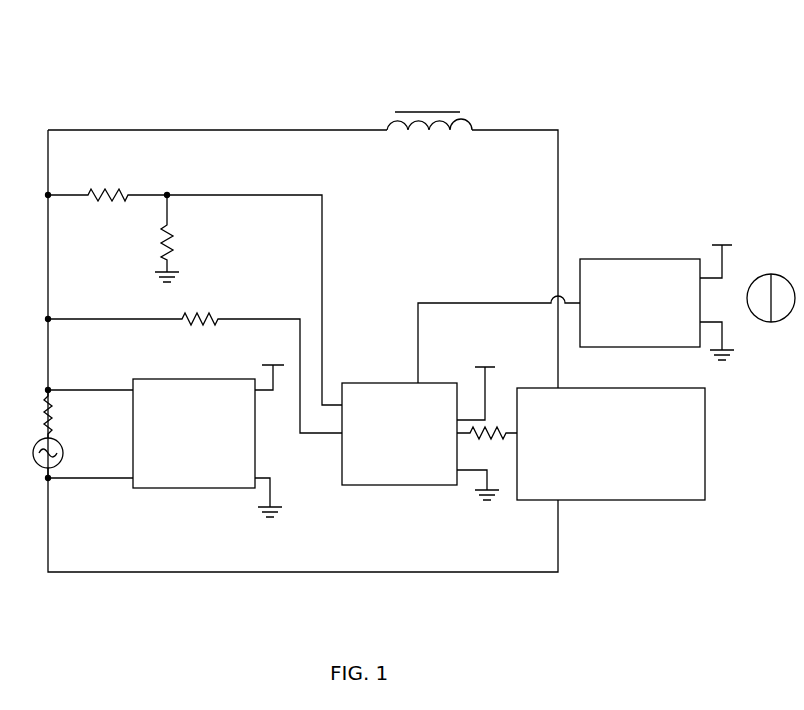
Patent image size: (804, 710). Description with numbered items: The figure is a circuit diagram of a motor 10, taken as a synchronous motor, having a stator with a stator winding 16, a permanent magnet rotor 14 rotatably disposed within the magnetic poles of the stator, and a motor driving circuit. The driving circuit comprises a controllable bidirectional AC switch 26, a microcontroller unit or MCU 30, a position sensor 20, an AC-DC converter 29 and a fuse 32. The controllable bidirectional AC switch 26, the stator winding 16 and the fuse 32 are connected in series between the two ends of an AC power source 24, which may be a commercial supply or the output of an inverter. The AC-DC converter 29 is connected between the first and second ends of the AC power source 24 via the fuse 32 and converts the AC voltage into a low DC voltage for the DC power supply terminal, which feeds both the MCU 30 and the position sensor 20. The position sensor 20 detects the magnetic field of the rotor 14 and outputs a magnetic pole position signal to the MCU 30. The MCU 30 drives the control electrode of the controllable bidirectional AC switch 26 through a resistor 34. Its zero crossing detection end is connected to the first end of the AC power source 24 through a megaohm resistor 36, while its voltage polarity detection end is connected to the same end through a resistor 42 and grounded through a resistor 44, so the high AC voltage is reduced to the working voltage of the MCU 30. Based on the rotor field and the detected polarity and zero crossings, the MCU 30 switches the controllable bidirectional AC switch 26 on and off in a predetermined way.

The motor 10 is at (234, 68).
The permanent magnet rotor 14 is at (772, 274).
The stator winding 16 is at (391, 128).
The position sensor 20 is at (652, 258).
The AC power source 24 is at (54, 443).
The controllable bidirectional AC switch 26 is at (706, 447).
The AC-DC converter 29 is at (177, 378).
The microcontroller unit (MCU) 30 is at (397, 486).
The fuse 32 is at (51, 413).
The resistor 34 is at (511, 440).
The resistor 36 is at (207, 311).
The resistor 42 is at (116, 188).
The resistor 44 is at (172, 233).